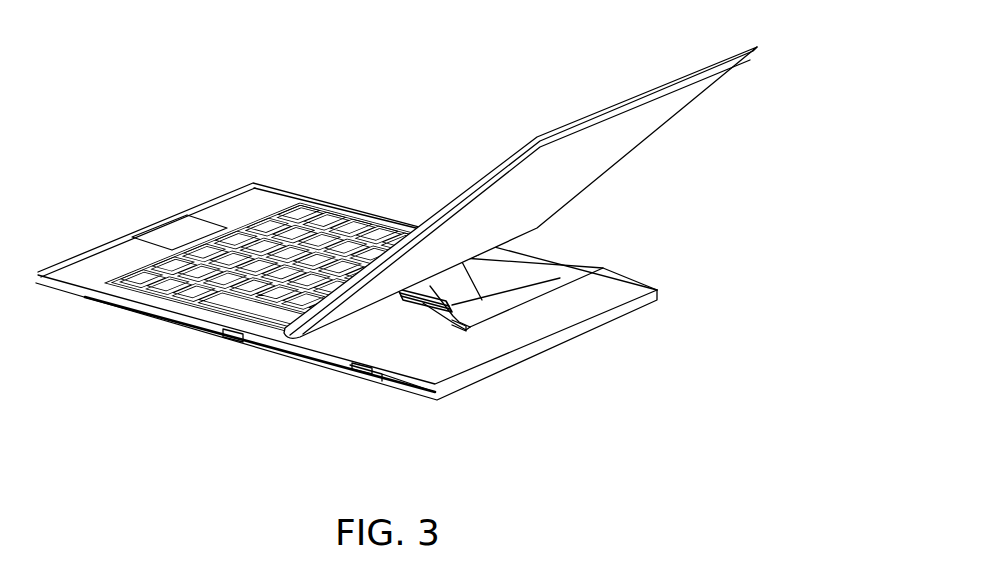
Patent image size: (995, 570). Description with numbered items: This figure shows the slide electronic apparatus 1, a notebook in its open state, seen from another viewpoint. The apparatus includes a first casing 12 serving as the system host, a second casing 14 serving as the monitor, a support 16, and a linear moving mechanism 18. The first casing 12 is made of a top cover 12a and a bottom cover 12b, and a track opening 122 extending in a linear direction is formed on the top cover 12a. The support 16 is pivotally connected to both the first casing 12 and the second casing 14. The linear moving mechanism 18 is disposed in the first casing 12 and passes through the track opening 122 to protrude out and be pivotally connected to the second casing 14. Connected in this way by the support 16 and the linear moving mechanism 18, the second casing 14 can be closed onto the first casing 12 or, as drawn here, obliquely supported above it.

The slide electronic apparatus 1 is at (396, 249).
The first casing 12 is at (346, 334).
The top cover 12a is at (332, 342).
The bottom cover 12b is at (271, 348).
The track opening 122 is at (412, 297).
The second casing 14 is at (610, 158).
The support 16 is at (468, 288).
The linear moving mechanism 18 is at (440, 307).